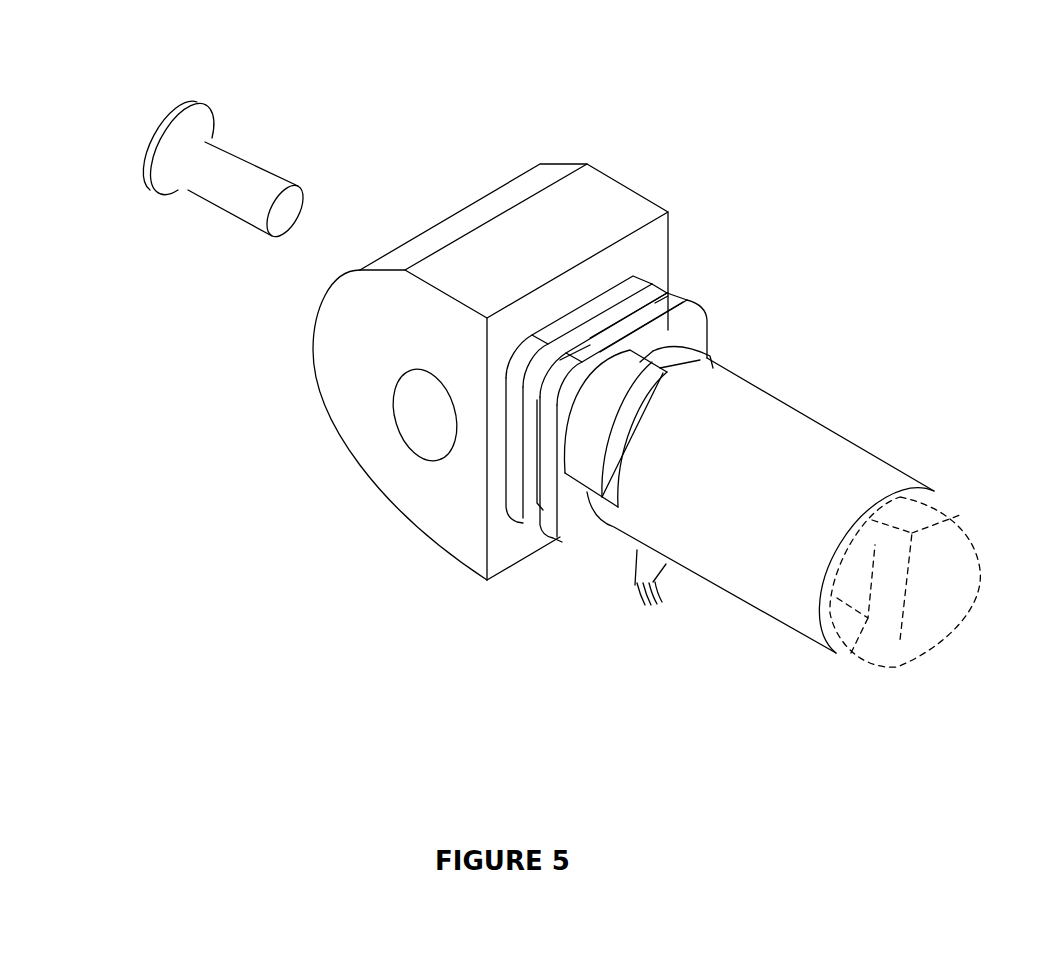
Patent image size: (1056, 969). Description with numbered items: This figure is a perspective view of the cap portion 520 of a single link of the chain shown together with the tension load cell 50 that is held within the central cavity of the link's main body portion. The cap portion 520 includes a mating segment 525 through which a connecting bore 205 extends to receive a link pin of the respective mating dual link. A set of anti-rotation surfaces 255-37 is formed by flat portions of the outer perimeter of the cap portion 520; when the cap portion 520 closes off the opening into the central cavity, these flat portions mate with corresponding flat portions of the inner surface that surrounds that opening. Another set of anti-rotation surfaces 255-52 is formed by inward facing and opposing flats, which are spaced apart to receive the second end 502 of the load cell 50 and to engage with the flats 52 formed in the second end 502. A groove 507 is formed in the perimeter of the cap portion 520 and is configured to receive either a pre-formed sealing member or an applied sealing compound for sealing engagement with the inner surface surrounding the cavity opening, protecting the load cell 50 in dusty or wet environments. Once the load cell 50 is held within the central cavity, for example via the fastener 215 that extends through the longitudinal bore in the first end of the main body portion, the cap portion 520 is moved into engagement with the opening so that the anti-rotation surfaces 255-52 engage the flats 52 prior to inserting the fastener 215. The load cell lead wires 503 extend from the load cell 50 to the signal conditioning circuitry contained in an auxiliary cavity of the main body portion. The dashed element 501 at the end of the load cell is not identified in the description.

The fastener 215 is at (283, 146).
The mating segment 525 is at (594, 196).
The anti-rotation surfaces 255-37 is at (672, 292).
The second end 502 is at (720, 341).
The tension load cell 50 is at (833, 453).
The flats 52 is at (682, 378).
The hex nut 501 is at (984, 490).
The cap portion 520 is at (307, 461).
The connecting bore 205 is at (419, 422).
The groove 507 is at (525, 522).
The anti-rotation surfaces 255-52 is at (593, 457).
The load cell lead wires 503 is at (650, 608).